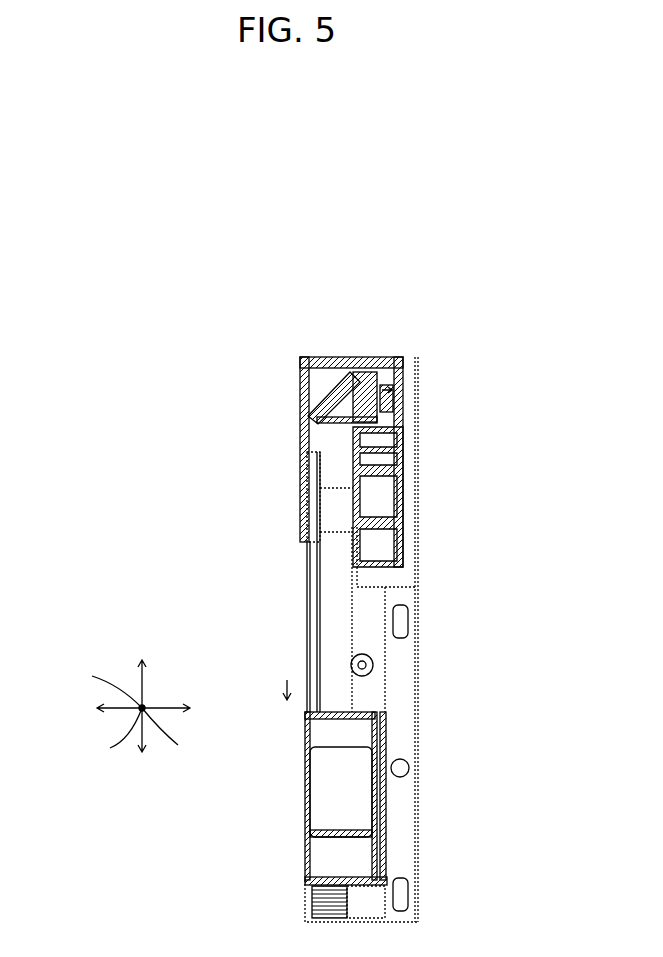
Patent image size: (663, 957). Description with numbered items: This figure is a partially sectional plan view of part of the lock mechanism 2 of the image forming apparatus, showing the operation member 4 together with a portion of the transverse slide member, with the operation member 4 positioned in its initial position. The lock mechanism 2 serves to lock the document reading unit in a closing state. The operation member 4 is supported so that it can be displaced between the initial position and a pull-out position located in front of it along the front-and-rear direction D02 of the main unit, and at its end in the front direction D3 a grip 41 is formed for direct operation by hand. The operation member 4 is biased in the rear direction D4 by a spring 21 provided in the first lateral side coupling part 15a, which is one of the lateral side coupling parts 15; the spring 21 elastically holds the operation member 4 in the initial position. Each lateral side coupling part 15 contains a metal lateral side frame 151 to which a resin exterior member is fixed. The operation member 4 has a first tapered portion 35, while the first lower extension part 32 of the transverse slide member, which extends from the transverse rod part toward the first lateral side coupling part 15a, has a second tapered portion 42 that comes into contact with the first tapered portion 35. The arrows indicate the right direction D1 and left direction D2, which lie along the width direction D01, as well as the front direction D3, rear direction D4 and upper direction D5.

The lock mechanism 2 is at (157, 356).
The operation member 4 is at (305, 608).
The second tapered portion 42 is at (356, 370).
The first tapered portion 35 is at (313, 416).
The first lower extension part 32 is at (392, 405).
The lateral side coupling part 15 is at (449, 497).
The first lateral side coupling part 15a is at (449, 497).
The lateral side frame 151 is at (421, 477).
The grip 41 is at (335, 832).
The spring 21 is at (318, 897).
The right direction D1 is at (179, 709).
The left direction D2 is at (103, 709).
The front direction D3 is at (143, 743).
The rear direction D4 is at (143, 676).
The upper direction D5 is at (102, 683).
The width direction D01 is at (180, 736).
The front-and-rear direction D02 is at (103, 736).